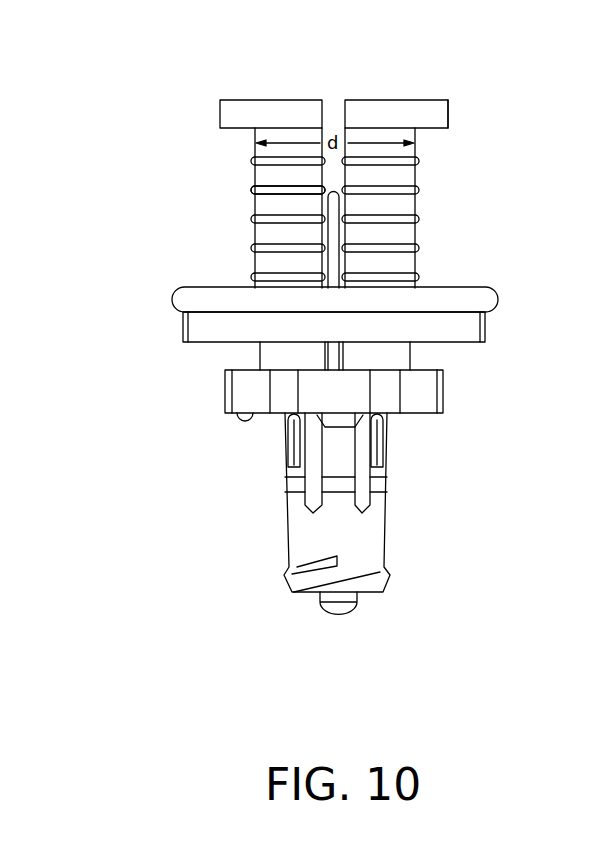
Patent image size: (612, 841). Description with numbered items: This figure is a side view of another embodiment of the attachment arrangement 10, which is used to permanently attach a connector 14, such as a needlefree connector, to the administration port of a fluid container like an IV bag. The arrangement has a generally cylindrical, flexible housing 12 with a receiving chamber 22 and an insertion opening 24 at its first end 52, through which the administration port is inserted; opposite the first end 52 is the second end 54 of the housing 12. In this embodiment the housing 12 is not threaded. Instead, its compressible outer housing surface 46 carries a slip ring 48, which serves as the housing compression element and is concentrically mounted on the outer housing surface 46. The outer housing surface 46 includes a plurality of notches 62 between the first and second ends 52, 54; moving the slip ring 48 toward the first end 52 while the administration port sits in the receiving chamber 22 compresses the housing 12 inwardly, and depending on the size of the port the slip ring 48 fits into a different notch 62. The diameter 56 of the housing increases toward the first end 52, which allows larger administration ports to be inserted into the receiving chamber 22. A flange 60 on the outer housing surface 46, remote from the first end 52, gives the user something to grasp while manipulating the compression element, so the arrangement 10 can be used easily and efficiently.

The attachment arrangement 10 is at (107, 78).
The housing 12 is at (252, 162).
The connector 14 is at (387, 522).
The receiving chamber 22 is at (427, 103).
The insertion opening 24 is at (370, 100).
The compressible outer housing surface 46 is at (252, 188).
The slip ring 48 is at (498, 300).
The first end 52 is at (450, 100).
The second end 54 is at (403, 353).
The pitch diameter 56 is at (288, 128).
The flange 60 is at (443, 390).
The notches 62 is at (417, 168).